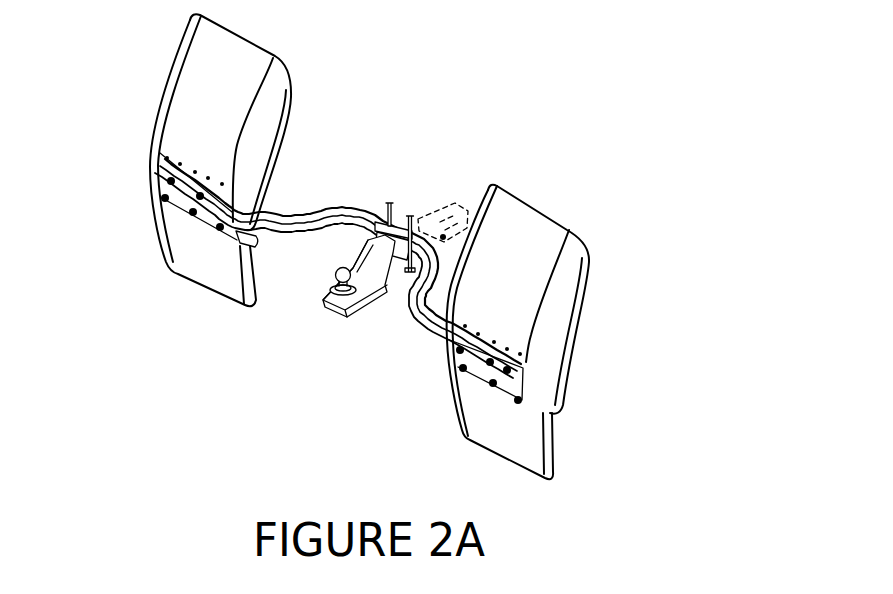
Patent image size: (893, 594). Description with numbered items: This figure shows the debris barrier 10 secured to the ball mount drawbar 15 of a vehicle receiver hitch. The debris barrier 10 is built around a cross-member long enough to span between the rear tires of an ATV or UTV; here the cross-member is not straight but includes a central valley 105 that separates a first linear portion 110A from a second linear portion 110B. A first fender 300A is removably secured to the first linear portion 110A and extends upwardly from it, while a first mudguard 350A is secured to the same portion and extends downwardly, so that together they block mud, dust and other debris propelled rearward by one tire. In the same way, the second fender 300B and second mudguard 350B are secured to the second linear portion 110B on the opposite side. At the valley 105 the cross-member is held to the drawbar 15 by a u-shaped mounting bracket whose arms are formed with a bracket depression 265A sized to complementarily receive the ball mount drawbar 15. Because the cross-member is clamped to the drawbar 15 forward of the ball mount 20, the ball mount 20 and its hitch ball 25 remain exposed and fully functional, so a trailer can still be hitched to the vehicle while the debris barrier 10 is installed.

The debris barrier 10 is at (593, 73).
The ball mount drawbar 15 is at (438, 202).
The ball mount 20 is at (358, 316).
The hitch ball 25 is at (332, 268).
The valley 105 is at (378, 210).
The first linear portion 110A is at (219, 212).
The second linear portion 110B is at (449, 343).
The bracket depression 265A is at (405, 272).
The first fender 300A is at (162, 92).
The second fender 300B is at (572, 317).
The first mudguard 350A is at (163, 230).
The second mudguard 350B is at (553, 447).